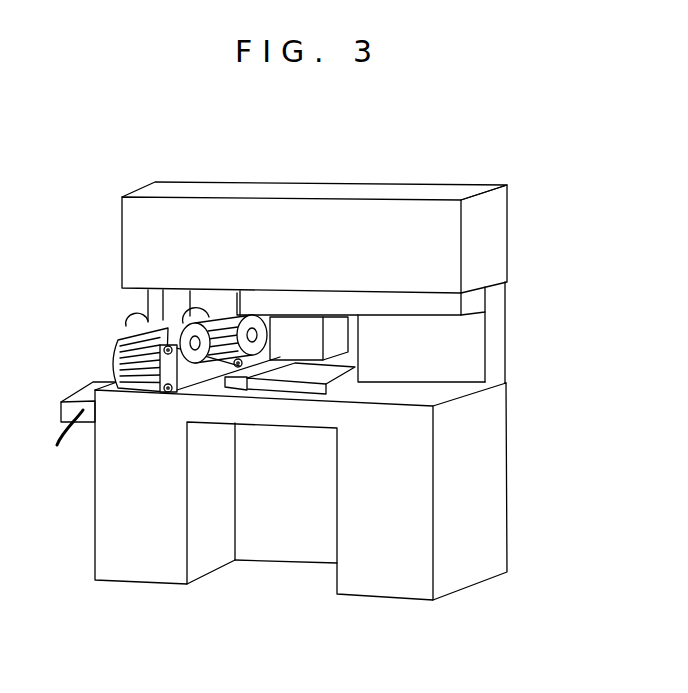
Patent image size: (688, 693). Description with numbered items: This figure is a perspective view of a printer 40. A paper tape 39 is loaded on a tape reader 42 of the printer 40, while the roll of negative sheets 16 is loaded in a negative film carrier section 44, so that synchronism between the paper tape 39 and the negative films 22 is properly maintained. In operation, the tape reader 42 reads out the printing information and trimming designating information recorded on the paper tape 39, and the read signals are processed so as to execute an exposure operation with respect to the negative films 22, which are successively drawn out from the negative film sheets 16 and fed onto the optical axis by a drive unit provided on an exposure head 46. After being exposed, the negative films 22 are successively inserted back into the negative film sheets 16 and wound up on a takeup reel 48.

The roll of negative sheets 16 is at (127, 362).
The negative films 22 is at (228, 383).
The paper tape 39 is at (74, 437).
The printer 40 is at (524, 344).
The tape reader 42 is at (82, 398).
The negative film carrier section 44 is at (215, 308).
The exposure head 46 is at (305, 338).
The takeup reel 48 is at (190, 332).